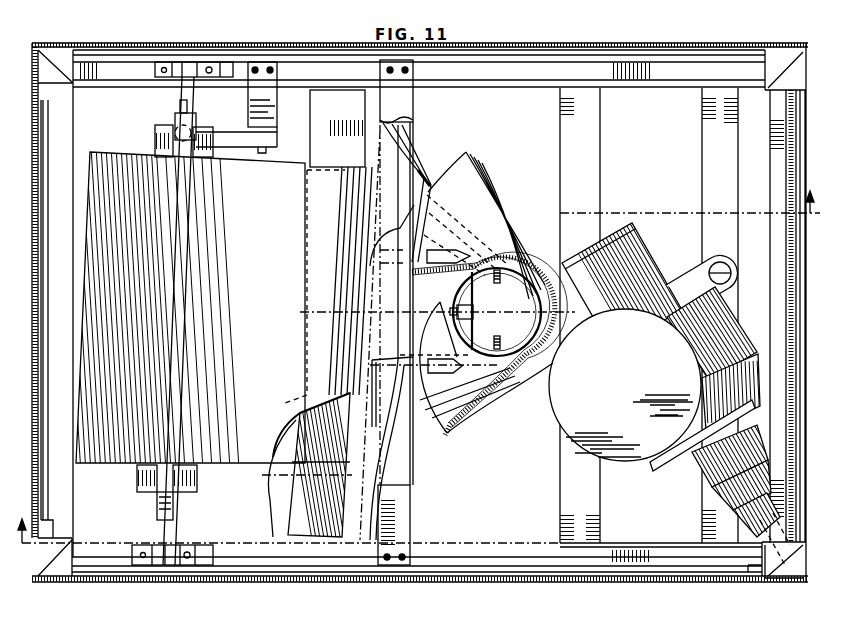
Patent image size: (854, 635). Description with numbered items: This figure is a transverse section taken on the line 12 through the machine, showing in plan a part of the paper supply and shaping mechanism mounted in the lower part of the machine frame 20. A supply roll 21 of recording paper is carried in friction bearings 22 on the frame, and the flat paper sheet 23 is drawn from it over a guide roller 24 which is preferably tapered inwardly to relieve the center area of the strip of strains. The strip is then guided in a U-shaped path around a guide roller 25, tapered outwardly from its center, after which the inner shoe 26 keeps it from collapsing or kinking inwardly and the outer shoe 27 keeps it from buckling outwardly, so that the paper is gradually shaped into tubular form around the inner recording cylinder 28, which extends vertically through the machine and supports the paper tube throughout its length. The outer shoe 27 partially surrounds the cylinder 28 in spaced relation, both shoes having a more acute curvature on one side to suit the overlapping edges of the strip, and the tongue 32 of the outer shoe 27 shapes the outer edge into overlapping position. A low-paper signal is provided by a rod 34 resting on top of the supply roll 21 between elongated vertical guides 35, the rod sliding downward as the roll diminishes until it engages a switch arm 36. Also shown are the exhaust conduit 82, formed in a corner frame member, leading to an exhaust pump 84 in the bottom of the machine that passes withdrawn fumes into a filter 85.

The section line 12- 12 is at (419, 378).
The machine frame 20 is at (115, 65).
The supply roll 21 is at (112, 160).
The friction bearings 22 is at (194, 67).
The flat paper sheet 23 is at (423, 177).
The guide roller 24 is at (305, 430).
The guide roller 25 is at (405, 130).
The inner shoe 26 is at (398, 162).
The outer shoe 27 is at (470, 196).
The inner recording cylinder 28 is at (458, 296).
The tongue 32 is at (430, 252).
The rod 34 is at (183, 333).
The vertical guides 35 is at (180, 107).
The switch arm 36 is at (237, 133).
The exhaust conduit 82 is at (787, 578).
The exhaust pump 84 is at (741, 332).
The filter 85 is at (558, 413).